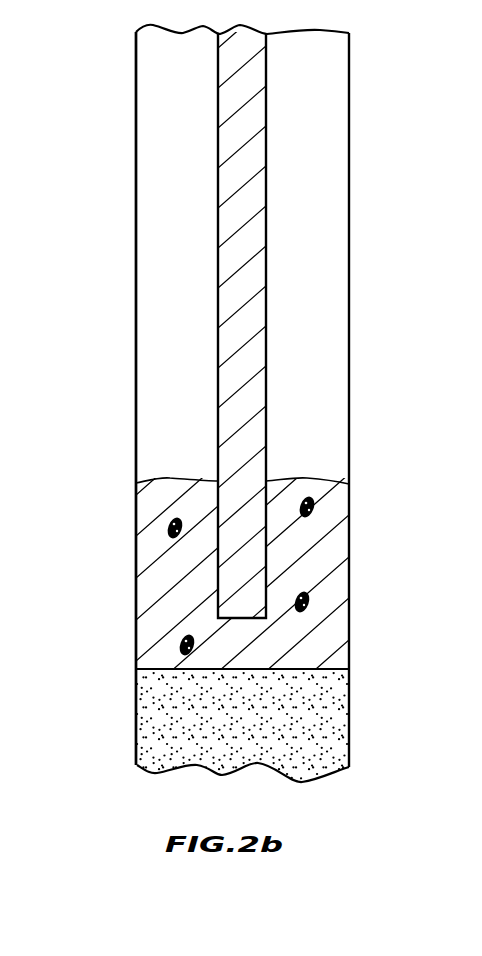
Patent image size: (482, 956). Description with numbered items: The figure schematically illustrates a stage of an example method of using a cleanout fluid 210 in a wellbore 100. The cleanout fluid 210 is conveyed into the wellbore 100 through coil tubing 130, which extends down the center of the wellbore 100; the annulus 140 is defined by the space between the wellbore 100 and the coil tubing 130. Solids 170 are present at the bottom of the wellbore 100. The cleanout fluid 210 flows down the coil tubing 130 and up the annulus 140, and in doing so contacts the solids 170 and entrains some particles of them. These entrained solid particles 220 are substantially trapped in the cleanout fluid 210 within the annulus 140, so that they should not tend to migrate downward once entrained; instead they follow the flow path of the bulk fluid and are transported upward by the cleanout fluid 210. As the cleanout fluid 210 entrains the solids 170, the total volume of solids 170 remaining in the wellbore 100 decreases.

The wellbore 100 is at (349, 470).
The coil tubing 130 is at (267, 148).
The annulus 140 is at (168, 242).
The solids 170 is at (323, 690).
The cleanout fluid 210 is at (237, 72).
The entrained solid particles 220 is at (166, 530).